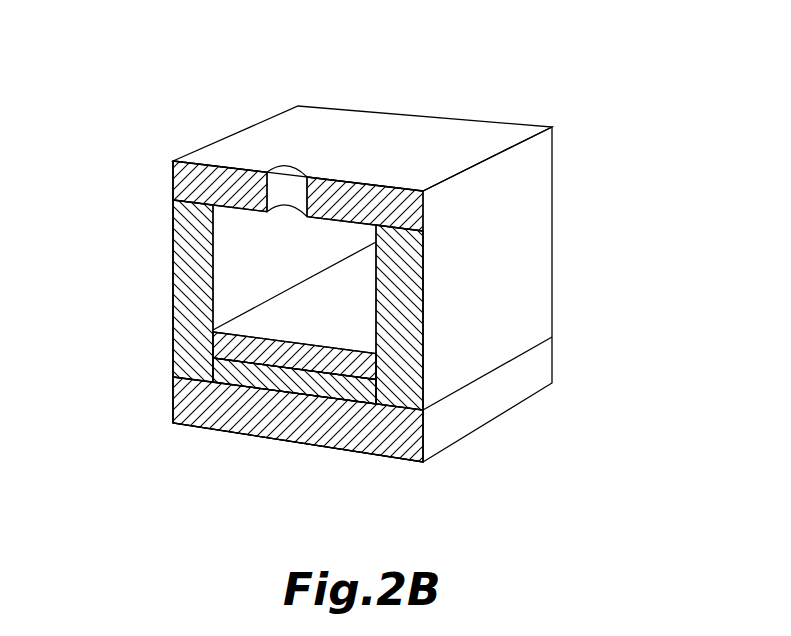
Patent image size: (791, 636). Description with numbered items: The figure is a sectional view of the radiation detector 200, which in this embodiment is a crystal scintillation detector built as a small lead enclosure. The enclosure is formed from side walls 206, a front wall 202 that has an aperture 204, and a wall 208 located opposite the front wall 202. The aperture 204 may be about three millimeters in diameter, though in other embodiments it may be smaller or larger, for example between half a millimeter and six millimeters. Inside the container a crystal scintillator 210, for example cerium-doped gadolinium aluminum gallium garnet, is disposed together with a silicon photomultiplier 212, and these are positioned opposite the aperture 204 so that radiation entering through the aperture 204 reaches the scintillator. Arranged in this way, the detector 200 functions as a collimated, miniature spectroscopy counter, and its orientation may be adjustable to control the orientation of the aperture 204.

The radiation detector 200 is at (579, 121).
The front wall 202 is at (448, 130).
The aperture 204 is at (286, 175).
The side walls 206 is at (173, 293).
The wall opposite the front wall 208 is at (295, 442).
The crystal scintillator 210 is at (227, 343).
The silicon photomultiplier 212 is at (240, 388).